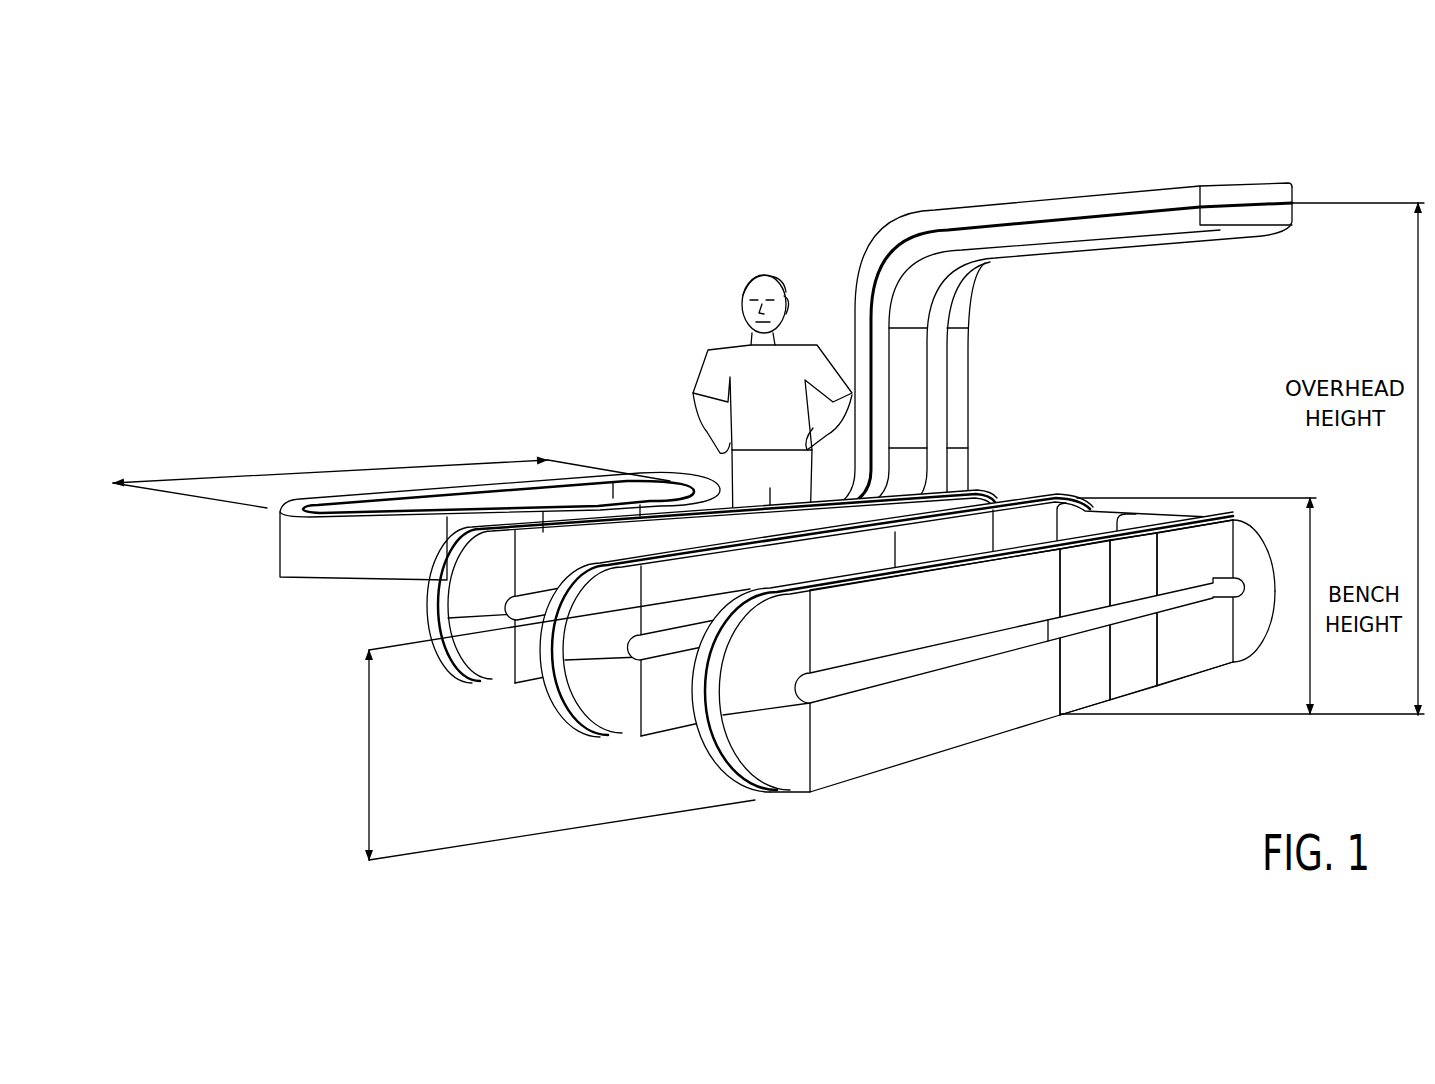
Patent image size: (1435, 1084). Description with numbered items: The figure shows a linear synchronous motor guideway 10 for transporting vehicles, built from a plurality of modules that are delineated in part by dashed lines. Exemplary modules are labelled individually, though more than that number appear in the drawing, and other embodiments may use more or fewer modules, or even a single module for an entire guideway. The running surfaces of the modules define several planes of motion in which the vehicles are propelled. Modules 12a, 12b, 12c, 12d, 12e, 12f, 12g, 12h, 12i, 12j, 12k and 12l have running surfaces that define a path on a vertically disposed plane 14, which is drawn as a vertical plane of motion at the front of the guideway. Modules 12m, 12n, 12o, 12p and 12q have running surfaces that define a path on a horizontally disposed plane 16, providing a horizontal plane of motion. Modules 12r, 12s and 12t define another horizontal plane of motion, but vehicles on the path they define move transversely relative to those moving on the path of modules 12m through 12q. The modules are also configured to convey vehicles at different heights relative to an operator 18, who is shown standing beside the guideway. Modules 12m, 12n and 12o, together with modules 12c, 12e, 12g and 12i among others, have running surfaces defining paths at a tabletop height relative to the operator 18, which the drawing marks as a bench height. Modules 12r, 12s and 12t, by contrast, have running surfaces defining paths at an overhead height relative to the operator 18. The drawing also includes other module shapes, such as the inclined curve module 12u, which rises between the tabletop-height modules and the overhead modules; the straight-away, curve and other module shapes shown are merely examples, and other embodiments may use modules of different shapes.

The linear synchronous motor guideway 10 is at (502, 297).
The vertically disposed plane 14 is at (501, 725).
The horizontally disposed plane 16 is at (391, 439).
The operator 18 is at (783, 282).
The module 12a is at (786, 660).
The module 12b is at (790, 752).
The module 12c is at (956, 615).
The module 12d is at (958, 725).
The module 12e is at (1104, 591).
The module 12f is at (1103, 679).
The module 12g is at (1155, 574).
The module 12h is at (1155, 662).
The module 12i is at (1210, 566).
The module 12j is at (1210, 651).
The module 12k is at (1198, 769).
The module 12l is at (1260, 627).
The module 12m is at (397, 564).
The module 12n is at (368, 502).
The module 12o is at (650, 492).
The module 12p is at (488, 524).
The module 12q is at (567, 512).
The module 12r is at (1017, 208).
The module 12s is at (1073, 247).
The module 12t is at (1235, 187).
The inclined curve module 12u is at (972, 458).